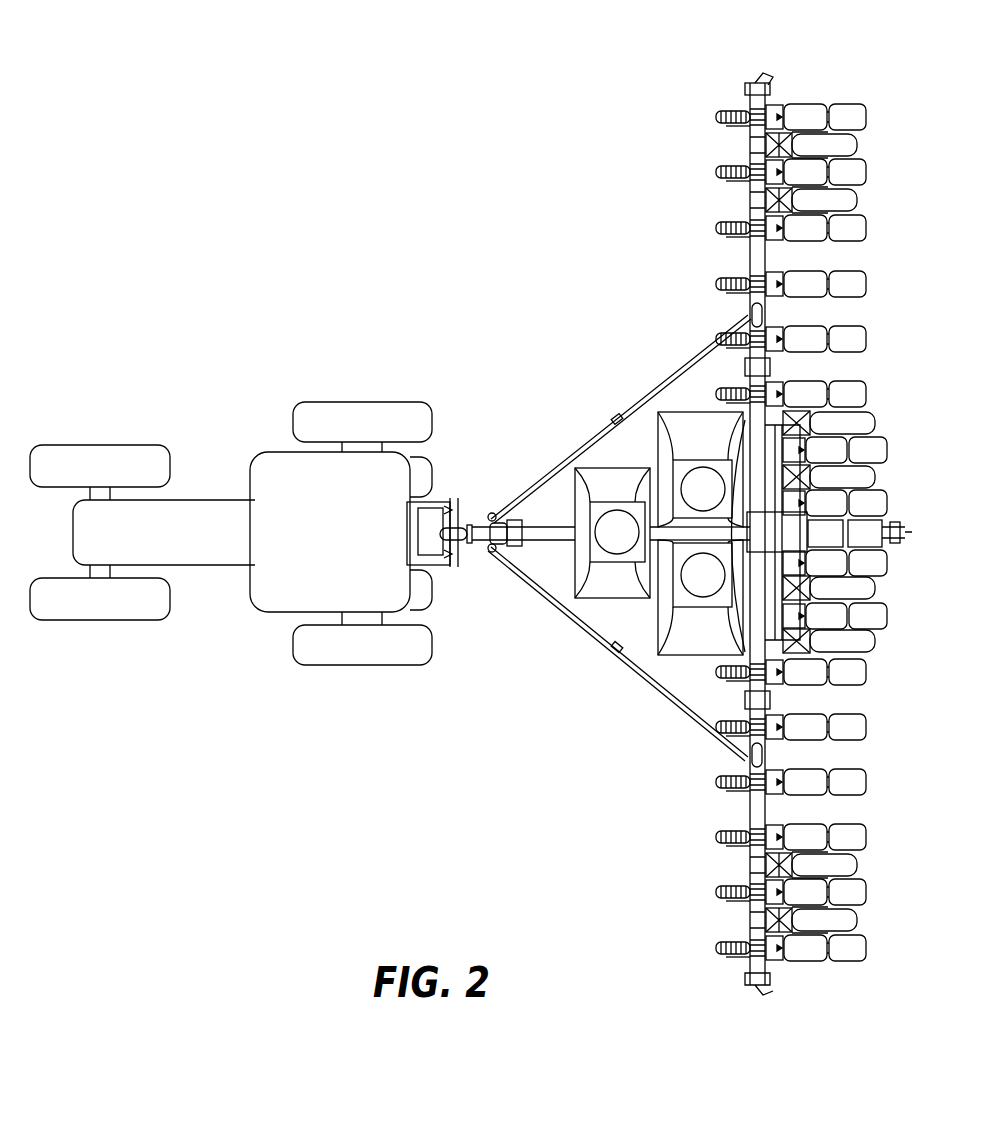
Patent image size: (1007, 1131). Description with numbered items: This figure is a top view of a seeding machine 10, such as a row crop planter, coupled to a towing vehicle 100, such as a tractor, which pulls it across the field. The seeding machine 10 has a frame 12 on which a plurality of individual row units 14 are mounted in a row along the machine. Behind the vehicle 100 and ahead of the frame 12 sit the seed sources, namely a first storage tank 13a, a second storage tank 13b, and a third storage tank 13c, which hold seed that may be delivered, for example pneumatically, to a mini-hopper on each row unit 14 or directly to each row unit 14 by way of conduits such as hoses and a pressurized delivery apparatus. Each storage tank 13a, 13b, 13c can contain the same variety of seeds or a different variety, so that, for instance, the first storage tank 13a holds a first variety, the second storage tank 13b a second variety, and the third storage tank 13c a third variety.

The vehicle 100 is at (162, 396).
The seeding machine 10 is at (576, 240).
The frame 12 is at (705, 352).
The first storage tank 13a is at (686, 640).
The second storage tank 13b is at (680, 412).
The third storage tank 13c is at (608, 480).
The row unit 14 is at (876, 172).